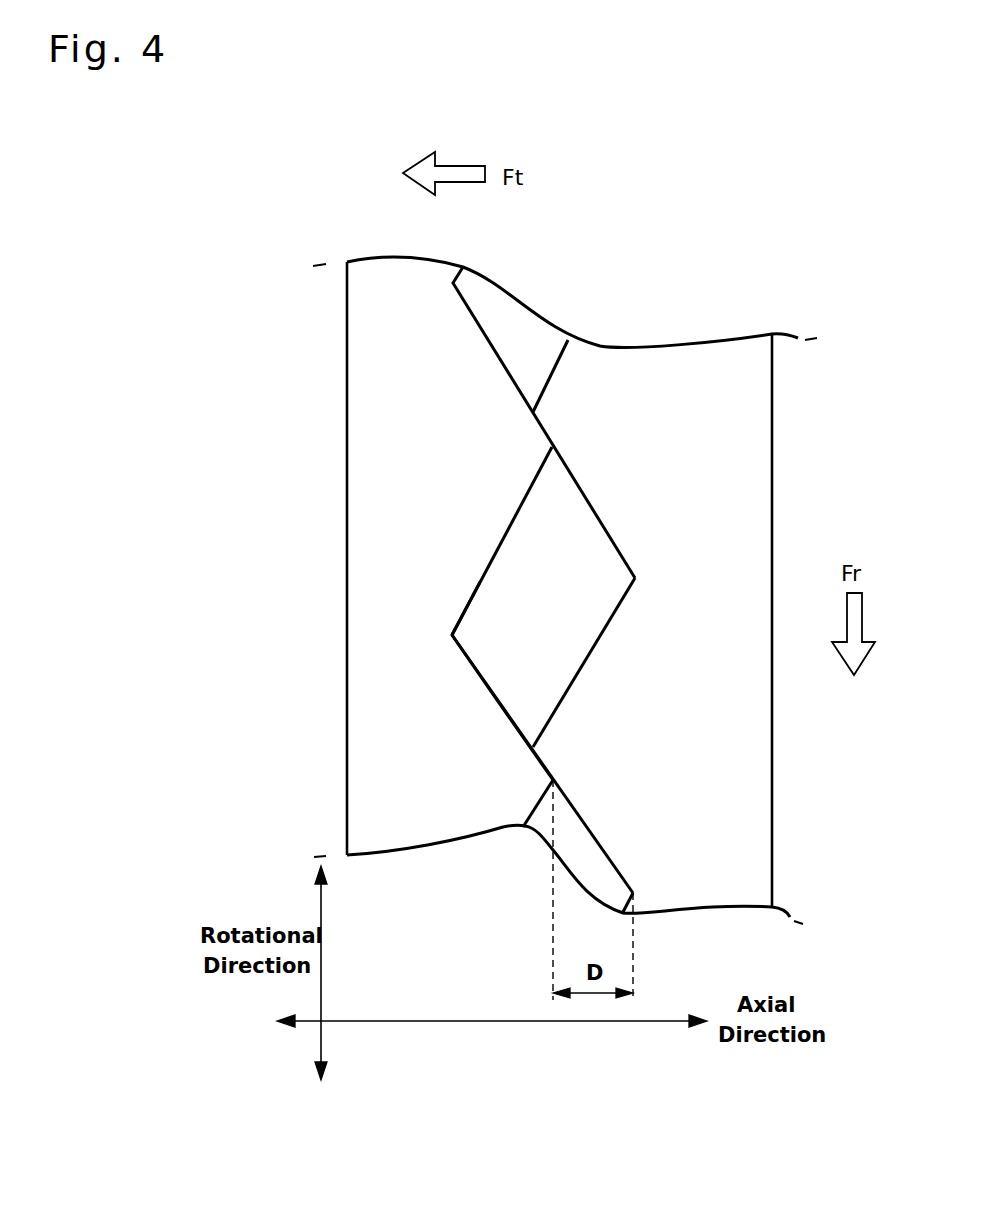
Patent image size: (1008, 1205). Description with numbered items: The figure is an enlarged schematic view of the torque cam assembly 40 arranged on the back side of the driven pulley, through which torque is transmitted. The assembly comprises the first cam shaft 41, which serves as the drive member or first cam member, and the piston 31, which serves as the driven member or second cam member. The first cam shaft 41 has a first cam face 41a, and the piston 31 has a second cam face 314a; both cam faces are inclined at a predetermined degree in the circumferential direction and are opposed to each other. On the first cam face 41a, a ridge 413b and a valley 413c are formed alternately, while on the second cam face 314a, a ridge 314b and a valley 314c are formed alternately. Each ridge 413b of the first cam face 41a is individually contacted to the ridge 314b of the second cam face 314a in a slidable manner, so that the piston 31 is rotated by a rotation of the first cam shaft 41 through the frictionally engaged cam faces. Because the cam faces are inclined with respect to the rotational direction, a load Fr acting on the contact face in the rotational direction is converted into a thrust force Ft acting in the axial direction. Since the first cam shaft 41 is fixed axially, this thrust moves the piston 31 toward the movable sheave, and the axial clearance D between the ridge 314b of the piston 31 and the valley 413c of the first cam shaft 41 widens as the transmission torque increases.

The piston 31 is at (347, 318).
The first cam shaft 41 is at (772, 382).
The torque cam assembly 40 is at (682, 258).
The second cam face 314a is at (512, 522).
The ridge 314b is at (552, 447).
The valley 314c is at (460, 622).
The valley 413c is at (630, 565).
The ridge 413b is at (531, 746).
The first cam face 41a is at (590, 648).